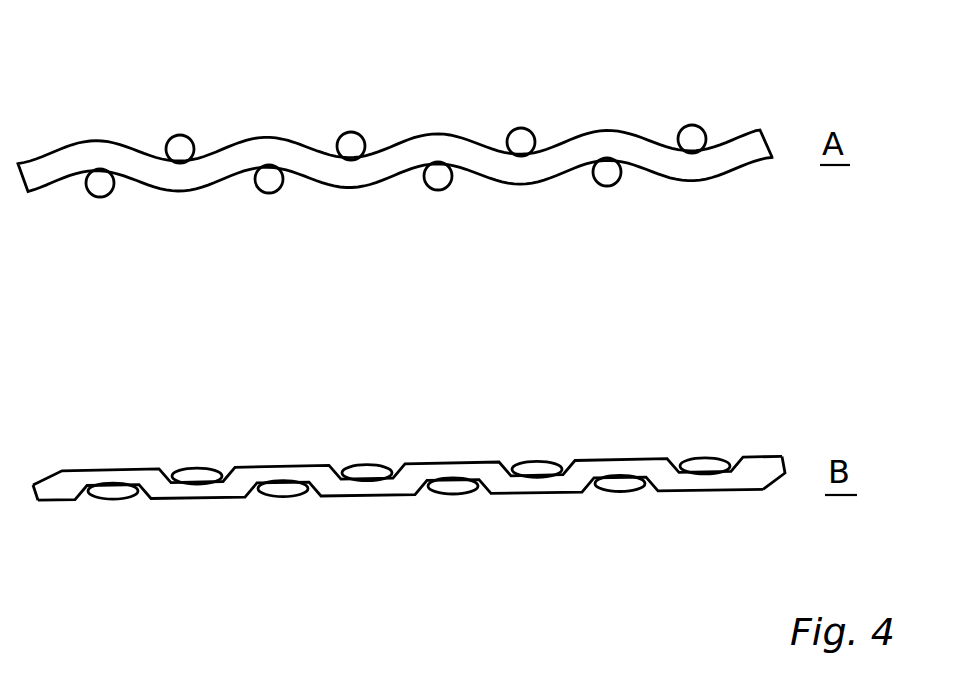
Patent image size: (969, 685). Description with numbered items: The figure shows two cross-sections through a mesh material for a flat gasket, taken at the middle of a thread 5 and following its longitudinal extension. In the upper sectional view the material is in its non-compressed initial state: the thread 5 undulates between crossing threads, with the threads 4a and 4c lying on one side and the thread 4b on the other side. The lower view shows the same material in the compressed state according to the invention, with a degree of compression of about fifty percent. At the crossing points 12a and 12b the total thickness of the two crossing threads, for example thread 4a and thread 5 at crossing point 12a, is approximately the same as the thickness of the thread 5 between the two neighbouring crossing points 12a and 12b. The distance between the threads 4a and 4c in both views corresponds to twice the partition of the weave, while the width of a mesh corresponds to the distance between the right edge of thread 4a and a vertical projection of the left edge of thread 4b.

The thread 4a is at (183, 148).
The thread 4b is at (268, 188).
The thread 4c is at (356, 148).
The thread 5 is at (427, 148).
The crossing point 12a is at (113, 478).
The crossing point 12b is at (200, 490).